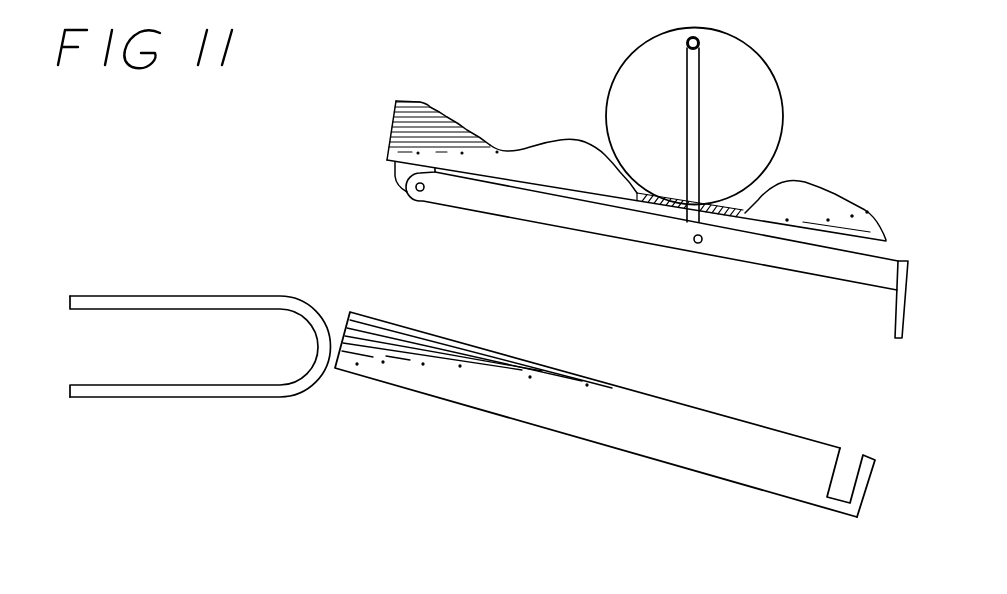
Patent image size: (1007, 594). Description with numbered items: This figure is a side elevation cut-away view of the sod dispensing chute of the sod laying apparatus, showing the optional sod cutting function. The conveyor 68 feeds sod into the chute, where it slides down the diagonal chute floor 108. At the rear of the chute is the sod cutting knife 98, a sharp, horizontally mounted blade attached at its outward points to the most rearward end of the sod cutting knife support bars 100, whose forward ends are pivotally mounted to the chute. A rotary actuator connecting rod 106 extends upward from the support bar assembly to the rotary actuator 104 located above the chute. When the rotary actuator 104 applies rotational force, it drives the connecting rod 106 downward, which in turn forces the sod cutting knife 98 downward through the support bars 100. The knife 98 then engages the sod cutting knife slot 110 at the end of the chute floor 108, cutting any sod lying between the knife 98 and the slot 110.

The conveyor 68 is at (120, 405).
The sod cutting knife 98 is at (890, 308).
The sod cutting knife support bars 100 is at (525, 207).
The rotary actuator 104 is at (607, 75).
The rotary actuator connecting rod 106 is at (683, 98).
The chute floor 108 is at (393, 390).
The sod cutting knife slot 110 is at (823, 480).